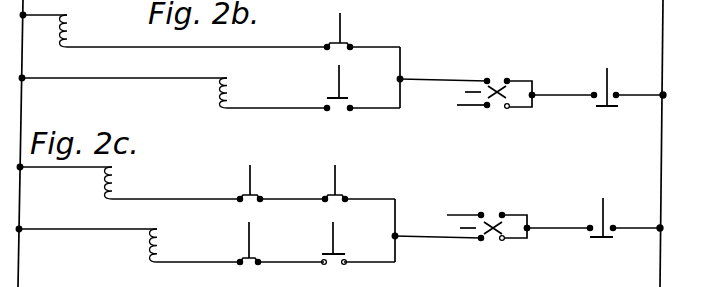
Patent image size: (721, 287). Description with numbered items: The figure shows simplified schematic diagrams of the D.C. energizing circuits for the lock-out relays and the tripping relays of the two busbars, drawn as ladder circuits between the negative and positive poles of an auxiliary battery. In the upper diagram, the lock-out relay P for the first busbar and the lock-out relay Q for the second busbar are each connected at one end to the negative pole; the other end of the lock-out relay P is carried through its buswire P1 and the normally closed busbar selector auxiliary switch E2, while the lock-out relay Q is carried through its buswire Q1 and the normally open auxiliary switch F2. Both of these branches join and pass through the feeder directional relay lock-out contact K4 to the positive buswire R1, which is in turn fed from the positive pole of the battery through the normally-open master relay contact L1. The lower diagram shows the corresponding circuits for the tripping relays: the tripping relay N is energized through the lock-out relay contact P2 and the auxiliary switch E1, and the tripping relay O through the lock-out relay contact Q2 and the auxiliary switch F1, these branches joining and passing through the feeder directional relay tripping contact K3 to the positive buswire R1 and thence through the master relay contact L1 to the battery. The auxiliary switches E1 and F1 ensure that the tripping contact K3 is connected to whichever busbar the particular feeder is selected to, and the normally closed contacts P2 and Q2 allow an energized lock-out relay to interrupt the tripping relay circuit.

In FIG. 2B, the lock-out relay P is at (72, 28).
In FIG. 2B, the lock-out relay Q is at (230, 92).
In FIG. 2C, the tripping relay N is at (117, 173).
In FIG. 2C, the tripping relay O is at (163, 238).
In FIG. 2B, the buswire P1 is at (284, 48).
In FIG. 2C, the lock-out relay contact P2 is at (254, 195).
In FIG. 2B, the buswire Q1 is at (283, 107).
In FIG. 2C, the lock-out relay contact Q2 is at (251, 257).
In FIG. 2C, the busbar selector auxiliary switch E1 is at (340, 196).
In FIG. 2B, the busbar selector auxiliary switch E2 is at (346, 45).
In FIG. 2C, the busbar selector auxiliary switch F1 is at (340, 252).
In FIG. 2B, the busbar selector auxiliary switch F2 is at (343, 95).
In FIG. 2B, the feeder directional relay tripping contact K3 is at (494, 109).
In FIG. 2C, the feeder directional relay tripping contact K3 is at (492, 242).
In FIG. 2B, the feeder directional relay lock-out contact K4 is at (497, 73).
In FIG. 2C, the feeder directional relay lock-out contact K4 is at (488, 210).
In FIG. 2B, the positive buswire R1 is at (533, 82).
In FIG. 2C, the positive buswire R1 is at (528, 218).
In FIG. 2B, the master relay contact L1 is at (612, 110).
In FIG. 2C, the master relay contact L1 is at (607, 241).